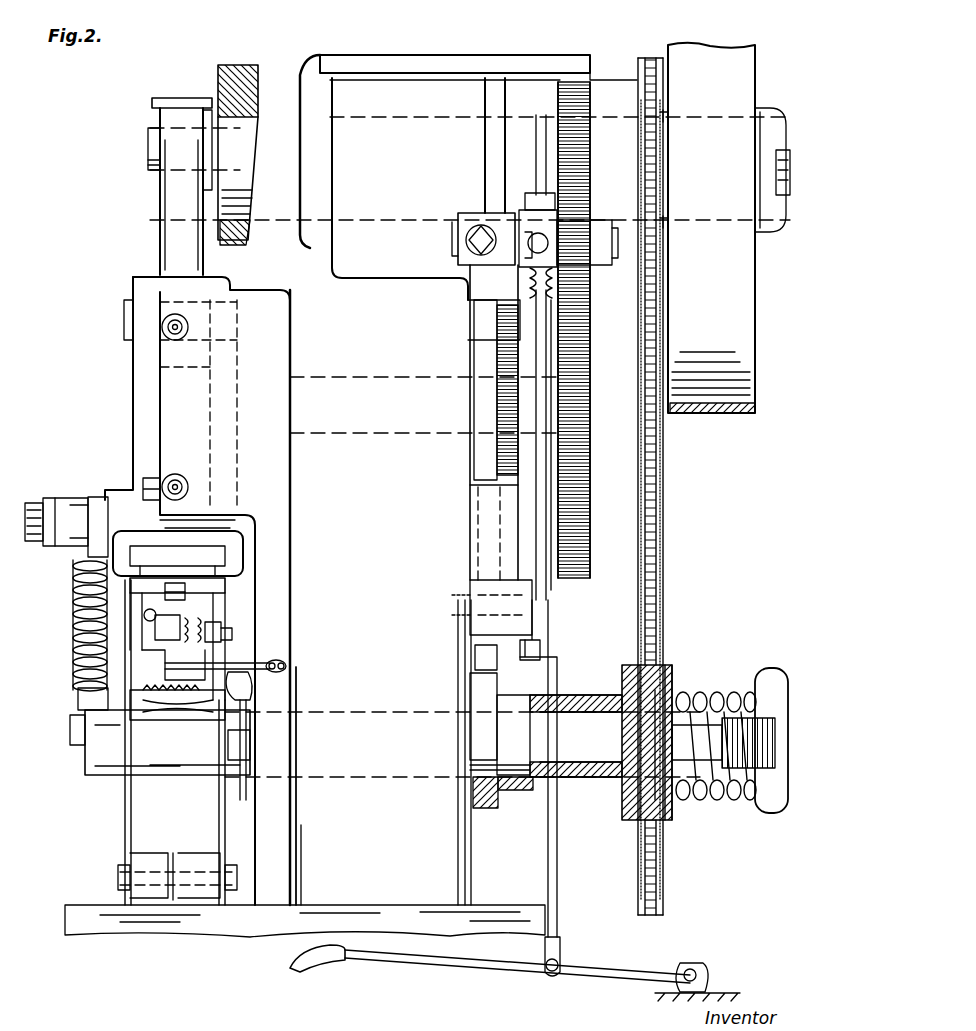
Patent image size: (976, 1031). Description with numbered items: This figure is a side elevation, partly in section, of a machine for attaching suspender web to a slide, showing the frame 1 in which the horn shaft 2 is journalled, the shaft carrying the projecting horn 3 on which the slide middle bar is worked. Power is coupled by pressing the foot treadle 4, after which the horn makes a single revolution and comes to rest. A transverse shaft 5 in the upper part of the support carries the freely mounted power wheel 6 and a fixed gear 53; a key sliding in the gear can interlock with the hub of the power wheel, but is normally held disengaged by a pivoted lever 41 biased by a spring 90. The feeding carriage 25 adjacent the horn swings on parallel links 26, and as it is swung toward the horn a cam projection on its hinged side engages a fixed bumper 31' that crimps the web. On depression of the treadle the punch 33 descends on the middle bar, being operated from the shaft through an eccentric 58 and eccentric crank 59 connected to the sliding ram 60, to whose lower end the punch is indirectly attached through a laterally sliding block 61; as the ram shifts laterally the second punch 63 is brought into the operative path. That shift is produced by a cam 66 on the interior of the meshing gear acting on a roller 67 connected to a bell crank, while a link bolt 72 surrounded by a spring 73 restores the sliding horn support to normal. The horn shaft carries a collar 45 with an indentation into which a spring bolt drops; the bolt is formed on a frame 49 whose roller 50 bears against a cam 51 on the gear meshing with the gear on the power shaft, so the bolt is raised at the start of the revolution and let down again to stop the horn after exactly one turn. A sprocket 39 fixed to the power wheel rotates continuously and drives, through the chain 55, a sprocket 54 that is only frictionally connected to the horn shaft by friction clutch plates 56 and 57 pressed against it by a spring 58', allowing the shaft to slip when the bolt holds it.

The frame 1 is at (351, 496).
The shaft 2 is at (342, 712).
The horn 3 is at (86, 766).
The foot treadle 4 is at (335, 963).
The shaft 5 is at (236, 105).
The power wheel 6 is at (740, 80).
The feeding carriage 25 is at (168, 712).
The parallel links 26 is at (220, 831).
The bumper 31' is at (225, 717).
The punch 33 is at (144, 600).
The sprocket 39 is at (650, 64).
The pivoted lever 41 is at (538, 118).
The collar 45 is at (476, 802).
The frame 49 is at (482, 445).
The roller 50 is at (480, 300).
The cam 51 is at (495, 352).
The gear 53 is at (570, 85).
The sprocket 54 is at (644, 645).
The chain 55 is at (656, 463).
The friction clutch plate 56 is at (622, 679).
The friction clutch plate 57 is at (674, 674).
The eccentric 58 is at (160, 96).
The spring 58' is at (730, 740).
The eccentric crank 59 is at (163, 222).
The sliding ram 60 is at (134, 414).
The laterally sliding block 61 is at (98, 498).
The second punch 63 is at (144, 630).
The cam 66 is at (584, 344).
The roller 67 is at (483, 531).
The link bolt 72 is at (78, 630).
The spring 73 is at (80, 665).
The spring 90 is at (532, 282).